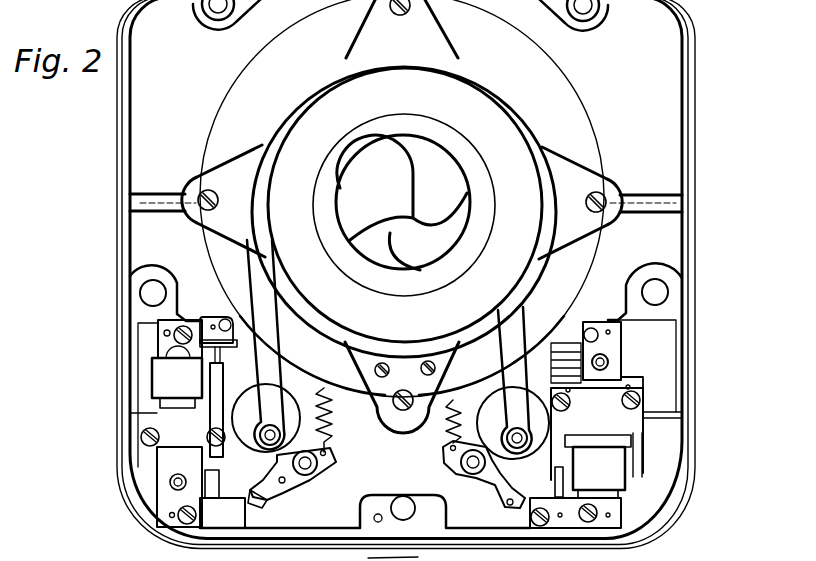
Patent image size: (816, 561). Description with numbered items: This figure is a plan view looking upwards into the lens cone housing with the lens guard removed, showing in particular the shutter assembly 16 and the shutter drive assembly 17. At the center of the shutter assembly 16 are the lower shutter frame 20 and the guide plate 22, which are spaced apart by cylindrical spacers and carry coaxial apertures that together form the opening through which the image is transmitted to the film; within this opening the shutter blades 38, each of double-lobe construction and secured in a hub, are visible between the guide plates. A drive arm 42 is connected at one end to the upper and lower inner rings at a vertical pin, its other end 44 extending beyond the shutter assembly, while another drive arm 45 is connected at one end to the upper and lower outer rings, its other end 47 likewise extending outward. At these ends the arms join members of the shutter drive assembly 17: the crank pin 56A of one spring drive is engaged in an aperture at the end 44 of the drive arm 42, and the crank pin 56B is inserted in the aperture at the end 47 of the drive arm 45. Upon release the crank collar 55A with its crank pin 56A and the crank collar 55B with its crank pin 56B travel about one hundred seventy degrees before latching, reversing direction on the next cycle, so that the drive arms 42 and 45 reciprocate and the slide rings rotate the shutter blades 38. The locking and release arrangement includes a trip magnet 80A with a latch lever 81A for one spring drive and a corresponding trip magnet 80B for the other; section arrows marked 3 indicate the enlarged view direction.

The section line of FIG. 3 is at (168, 176).
The shutter assembly 16 is at (538, 120).
The shutter drive assembly 17 is at (440, 461).
The lower shutter frame 20 is at (478, 117).
The guide plate 22 is at (348, 138).
The shutter blades 38 is at (353, 183).
The drive arm 42 is at (266, 344).
The end of drive arm 44 is at (291, 444).
The drive arm 45 is at (510, 364).
The end of drive arm 47 is at (494, 437).
The crank collar 55A is at (294, 419).
The crank collar 55B is at (496, 470).
The crank pin 56A is at (303, 480).
The crank pin 56B is at (498, 490).
The trip magnet 80A is at (160, 378).
The trip magnet 80B is at (614, 478).
The latch lever 81A is at (252, 507).